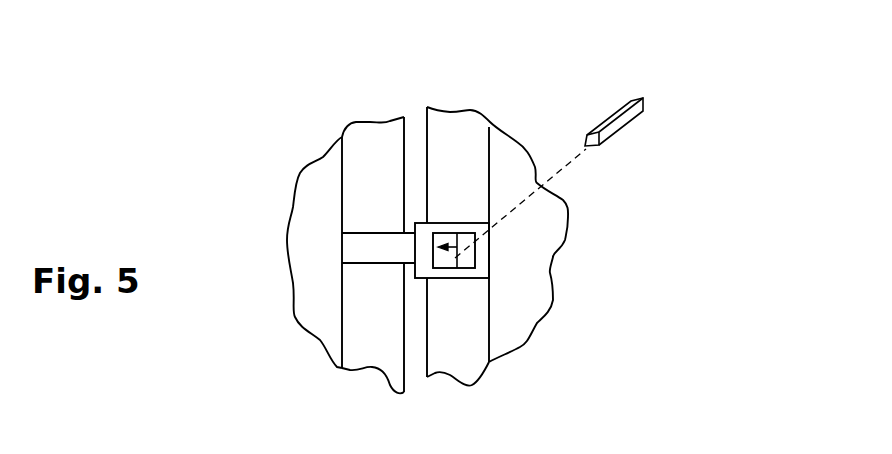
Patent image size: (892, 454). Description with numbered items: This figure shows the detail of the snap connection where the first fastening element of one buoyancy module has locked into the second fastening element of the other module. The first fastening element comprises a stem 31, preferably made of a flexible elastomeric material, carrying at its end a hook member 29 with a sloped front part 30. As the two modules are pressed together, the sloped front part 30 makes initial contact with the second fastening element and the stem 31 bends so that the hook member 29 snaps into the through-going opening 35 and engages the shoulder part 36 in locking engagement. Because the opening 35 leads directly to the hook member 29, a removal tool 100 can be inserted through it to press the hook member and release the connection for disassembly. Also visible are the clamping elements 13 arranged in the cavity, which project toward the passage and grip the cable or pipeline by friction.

The clamping element 13 is at (373, 335).
The hook member 29 is at (443, 262).
The sloped front part 30 is at (458, 243).
The stem 31 is at (375, 248).
The through-going opening 35 is at (475, 245).
The shoulder part 36 is at (427, 252).
The removal tool 100 is at (618, 130).